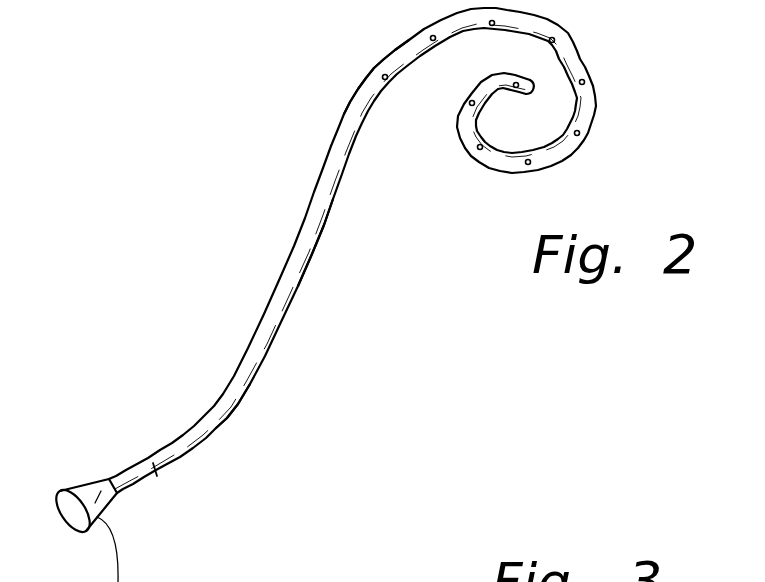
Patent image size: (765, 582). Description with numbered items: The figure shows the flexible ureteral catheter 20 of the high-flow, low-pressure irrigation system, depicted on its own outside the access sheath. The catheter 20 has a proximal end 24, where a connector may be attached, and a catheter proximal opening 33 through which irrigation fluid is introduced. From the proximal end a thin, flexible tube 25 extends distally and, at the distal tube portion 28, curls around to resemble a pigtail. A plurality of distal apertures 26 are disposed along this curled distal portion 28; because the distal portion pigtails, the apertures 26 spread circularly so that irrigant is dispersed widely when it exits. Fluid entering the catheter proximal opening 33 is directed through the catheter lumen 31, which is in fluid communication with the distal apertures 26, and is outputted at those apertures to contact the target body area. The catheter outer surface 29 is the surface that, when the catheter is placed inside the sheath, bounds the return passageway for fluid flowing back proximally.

The flexible ureteral catheter 20 is at (230, 300).
The proximal end 24 is at (88, 478).
The thin, flexible tube 25 is at (238, 395).
The distal apertures 26 is at (583, 84).
The distal tube portion 28 is at (376, 63).
The catheter outer surface 29 is at (310, 252).
The catheter lumen 31 is at (157, 481).
The catheter proximal opening 33 is at (62, 507).